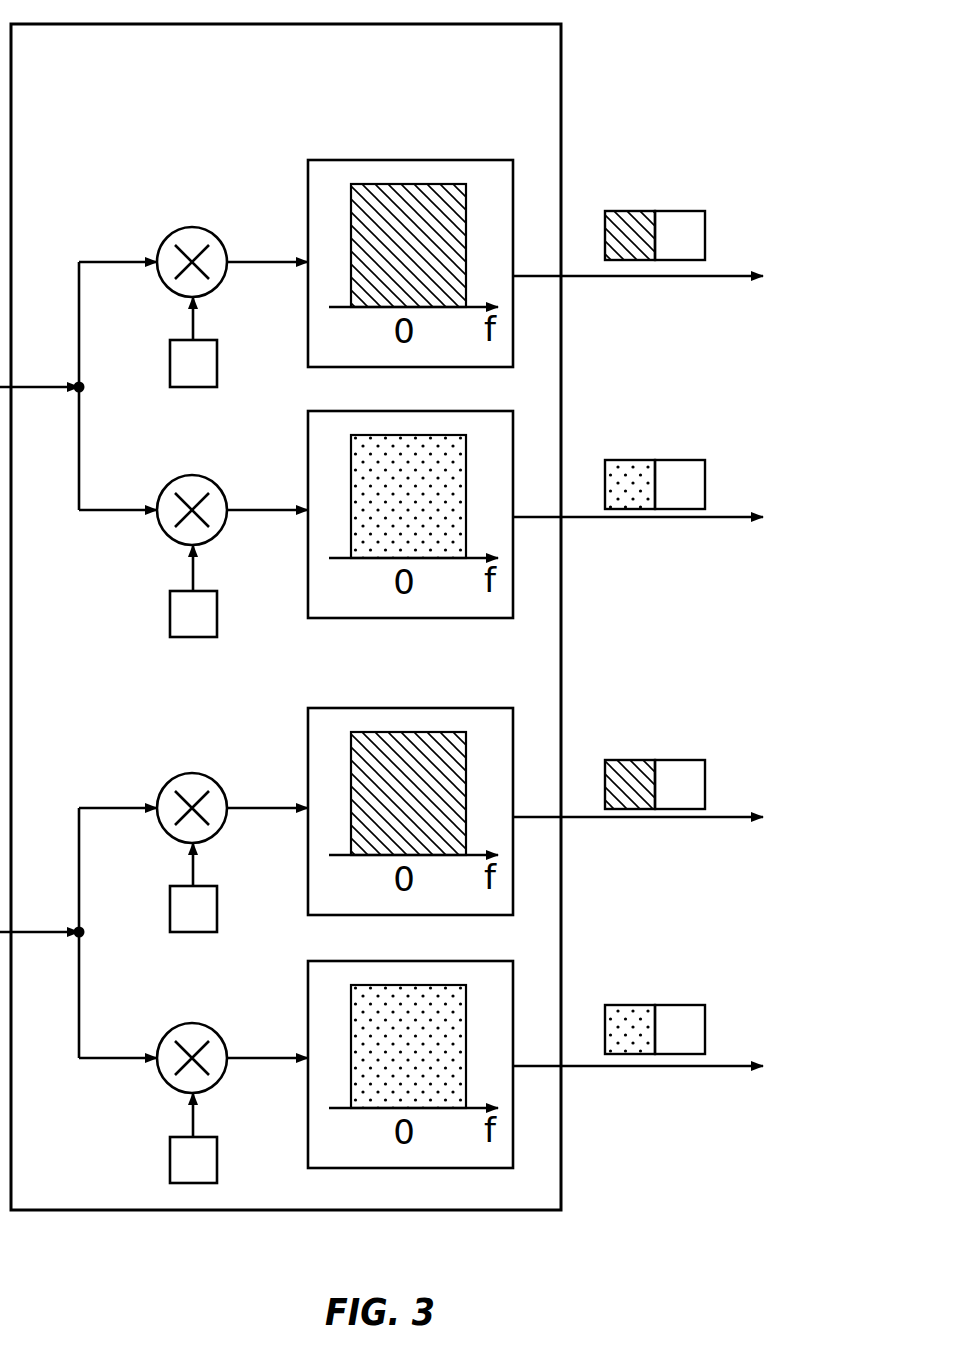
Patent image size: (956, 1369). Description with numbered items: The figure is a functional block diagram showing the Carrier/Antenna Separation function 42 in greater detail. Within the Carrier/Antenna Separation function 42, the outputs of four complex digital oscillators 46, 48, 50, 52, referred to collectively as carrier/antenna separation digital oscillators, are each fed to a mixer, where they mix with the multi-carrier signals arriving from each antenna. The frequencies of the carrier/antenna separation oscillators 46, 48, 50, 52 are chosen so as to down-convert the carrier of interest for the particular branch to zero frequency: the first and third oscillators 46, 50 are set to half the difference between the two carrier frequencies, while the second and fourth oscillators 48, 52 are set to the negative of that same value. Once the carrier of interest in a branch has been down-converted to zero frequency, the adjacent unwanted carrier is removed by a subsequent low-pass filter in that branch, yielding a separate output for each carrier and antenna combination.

The Carrier/Antenna Separation function 42 is at (269, 129).
The complex digital oscillator 46 is at (178, 378).
The complex digital oscillator 48 is at (178, 628).
The complex digital oscillator 50 is at (178, 923).
The complex digital oscillator 52 is at (178, 1174).